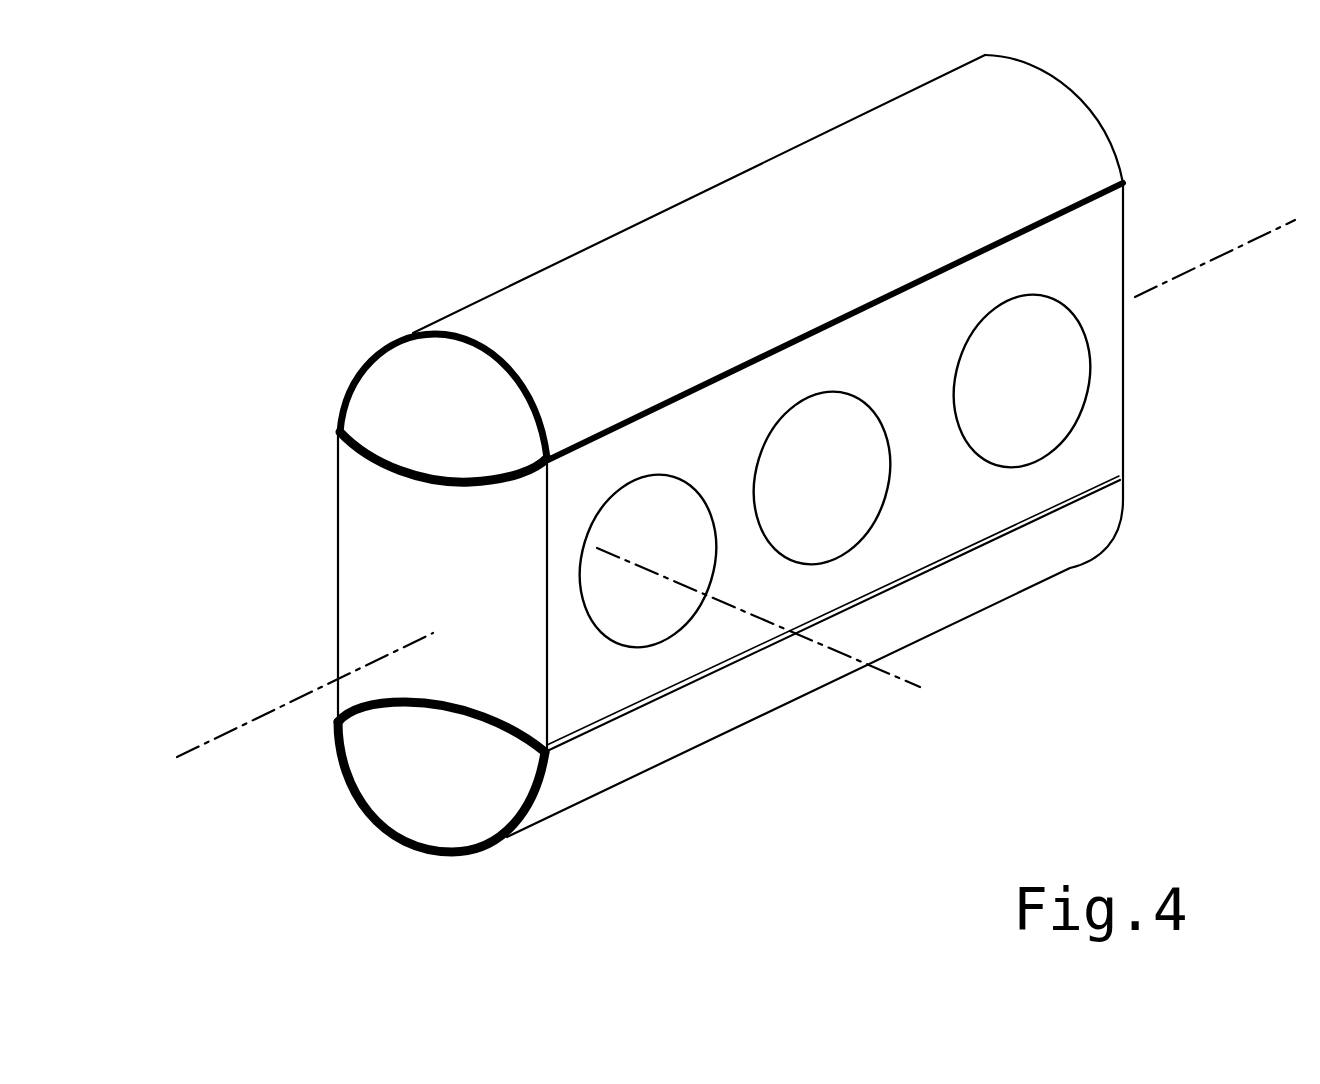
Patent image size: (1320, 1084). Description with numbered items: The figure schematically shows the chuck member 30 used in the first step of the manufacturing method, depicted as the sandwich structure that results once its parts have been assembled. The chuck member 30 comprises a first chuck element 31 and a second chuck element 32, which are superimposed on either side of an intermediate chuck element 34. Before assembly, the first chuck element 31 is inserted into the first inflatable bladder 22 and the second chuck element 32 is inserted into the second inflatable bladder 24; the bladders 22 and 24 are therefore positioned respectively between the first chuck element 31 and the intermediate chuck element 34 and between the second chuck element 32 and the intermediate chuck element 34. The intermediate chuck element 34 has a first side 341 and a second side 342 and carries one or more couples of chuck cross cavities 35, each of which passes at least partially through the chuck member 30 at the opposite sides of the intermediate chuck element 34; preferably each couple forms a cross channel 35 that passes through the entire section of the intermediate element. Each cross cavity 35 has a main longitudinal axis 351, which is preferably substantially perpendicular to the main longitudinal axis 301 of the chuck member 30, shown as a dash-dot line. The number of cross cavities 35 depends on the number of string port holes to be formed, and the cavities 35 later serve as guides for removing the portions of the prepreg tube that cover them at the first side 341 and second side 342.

The chuck member 30 is at (1113, 128).
The first chuck element 31 is at (417, 398).
The second chuck element 32 is at (422, 783).
The first inflatable bladder 22 is at (358, 455).
The second inflatable bladder 24 is at (338, 718).
The intermediate chuck element 34 is at (382, 607).
The first side 341 is at (592, 707).
The second side 342 is at (338, 535).
The chuck cross cavity 35 is at (650, 613).
The main longitudinal axis of the cross cavity 351 is at (873, 663).
The main longitudinal axis of the chuck member 301 is at (217, 737).